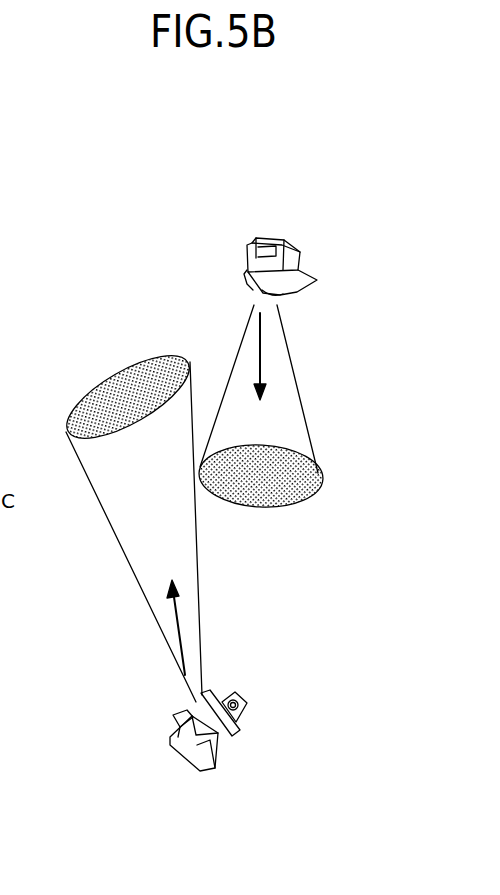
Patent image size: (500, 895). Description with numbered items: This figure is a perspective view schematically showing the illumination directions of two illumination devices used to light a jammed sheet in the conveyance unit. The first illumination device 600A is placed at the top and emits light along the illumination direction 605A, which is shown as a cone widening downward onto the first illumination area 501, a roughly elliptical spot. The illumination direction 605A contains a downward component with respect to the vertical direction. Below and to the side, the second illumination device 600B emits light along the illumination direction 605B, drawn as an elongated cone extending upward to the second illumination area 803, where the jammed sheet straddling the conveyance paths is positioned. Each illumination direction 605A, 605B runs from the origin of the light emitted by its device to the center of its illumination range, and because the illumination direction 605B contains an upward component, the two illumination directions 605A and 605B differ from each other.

The first illumination device 600A is at (290, 257).
The illumination direction 605A is at (258, 348).
The first illumination area 501 is at (308, 502).
The second illumination area 803 is at (98, 382).
The illumination direction 605B is at (177, 637).
The second illumination device 600B is at (198, 742).